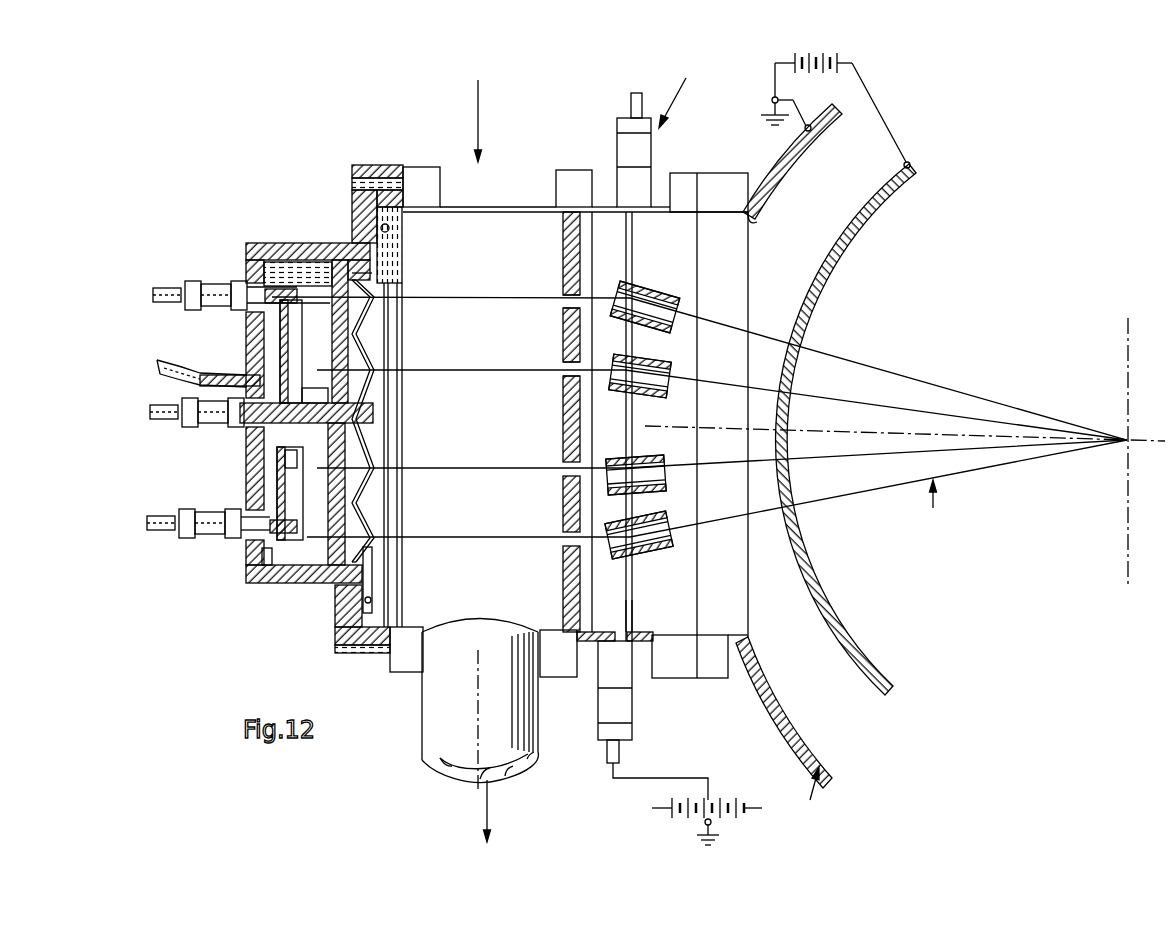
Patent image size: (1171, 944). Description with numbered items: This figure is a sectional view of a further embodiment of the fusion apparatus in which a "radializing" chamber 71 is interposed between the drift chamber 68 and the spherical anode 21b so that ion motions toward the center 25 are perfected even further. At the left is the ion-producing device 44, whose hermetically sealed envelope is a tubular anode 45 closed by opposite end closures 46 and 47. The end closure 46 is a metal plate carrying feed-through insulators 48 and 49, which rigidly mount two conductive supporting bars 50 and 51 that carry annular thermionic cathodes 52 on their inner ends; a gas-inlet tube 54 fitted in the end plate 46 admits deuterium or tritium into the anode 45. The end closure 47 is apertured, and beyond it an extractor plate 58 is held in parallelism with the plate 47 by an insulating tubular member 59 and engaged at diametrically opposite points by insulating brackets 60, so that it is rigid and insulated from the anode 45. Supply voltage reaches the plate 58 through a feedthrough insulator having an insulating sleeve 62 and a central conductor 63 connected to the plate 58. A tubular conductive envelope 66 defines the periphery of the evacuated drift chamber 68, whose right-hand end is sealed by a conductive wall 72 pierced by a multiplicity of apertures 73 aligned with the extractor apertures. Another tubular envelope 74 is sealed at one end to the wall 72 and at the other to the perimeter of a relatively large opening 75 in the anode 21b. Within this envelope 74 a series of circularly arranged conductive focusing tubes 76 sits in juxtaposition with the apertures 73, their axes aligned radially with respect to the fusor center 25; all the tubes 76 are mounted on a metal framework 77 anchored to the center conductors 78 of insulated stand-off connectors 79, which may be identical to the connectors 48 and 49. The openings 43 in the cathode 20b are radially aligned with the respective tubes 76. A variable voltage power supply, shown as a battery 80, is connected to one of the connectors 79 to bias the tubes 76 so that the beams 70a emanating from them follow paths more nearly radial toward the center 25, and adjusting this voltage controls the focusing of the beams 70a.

The cathode 20b is at (873, 226).
The spherical anode 21b is at (822, 150).
The fusor center 25 is at (1130, 440).
The openings in cathode 43 is at (796, 351).
The ion-producing device 44 is at (138, 330).
The tubular anode 45 is at (309, 243).
The end closure 46 is at (246, 468).
The end closure 47 is at (320, 583).
The feed-through insulator 48 is at (200, 283).
The feed-through insulator 49 is at (228, 540).
The conductive supporting bar 50 is at (278, 302).
The conductive supporting bar 51 is at (274, 583).
The thermionic cathode 52 is at (300, 345).
The gas-inlet tube 54 is at (180, 362).
The extractor plate 58 is at (376, 331).
The tubular member 59 is at (397, 266).
The brackets 60 is at (395, 250).
The sleeve 62 is at (322, 425).
The central conductor 63 is at (310, 403).
The tubular conductive envelope 66 is at (507, 204).
The drift chamber 68 is at (525, 241).
The radializing chamber 71 is at (683, 247).
The conductive wall 72 is at (563, 262).
The apertures 73 is at (573, 304).
The tubular envelope 74 is at (657, 205).
The opening 75 is at (762, 226).
The focusing tubes 76 is at (656, 290).
The metal framework 77 is at (626, 432).
The center conductors 78 is at (633, 598).
The stand-off connectors 79 is at (617, 136).
The battery 80 is at (723, 772).
The beams 70a is at (742, 338).